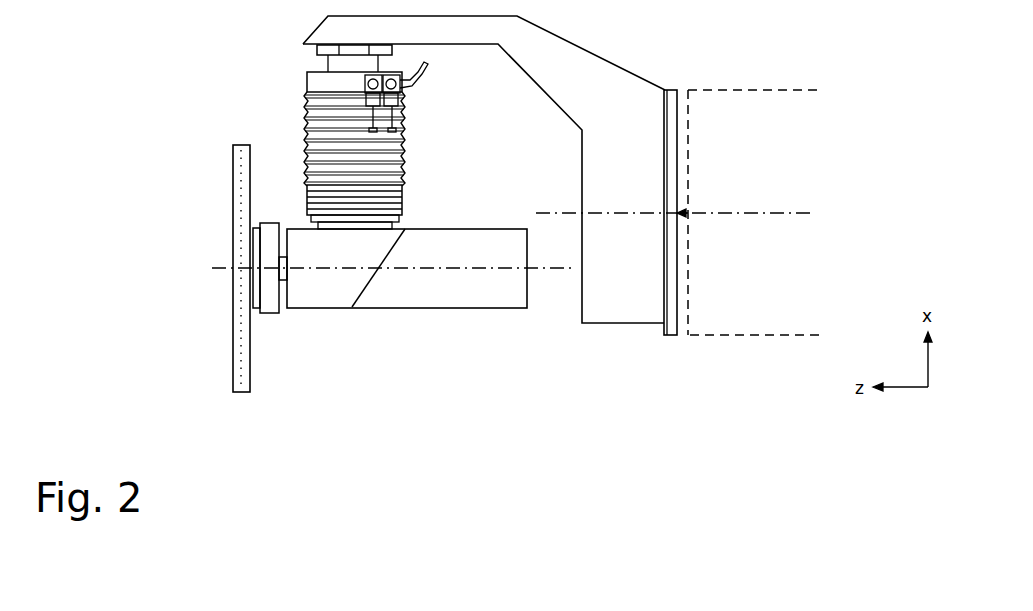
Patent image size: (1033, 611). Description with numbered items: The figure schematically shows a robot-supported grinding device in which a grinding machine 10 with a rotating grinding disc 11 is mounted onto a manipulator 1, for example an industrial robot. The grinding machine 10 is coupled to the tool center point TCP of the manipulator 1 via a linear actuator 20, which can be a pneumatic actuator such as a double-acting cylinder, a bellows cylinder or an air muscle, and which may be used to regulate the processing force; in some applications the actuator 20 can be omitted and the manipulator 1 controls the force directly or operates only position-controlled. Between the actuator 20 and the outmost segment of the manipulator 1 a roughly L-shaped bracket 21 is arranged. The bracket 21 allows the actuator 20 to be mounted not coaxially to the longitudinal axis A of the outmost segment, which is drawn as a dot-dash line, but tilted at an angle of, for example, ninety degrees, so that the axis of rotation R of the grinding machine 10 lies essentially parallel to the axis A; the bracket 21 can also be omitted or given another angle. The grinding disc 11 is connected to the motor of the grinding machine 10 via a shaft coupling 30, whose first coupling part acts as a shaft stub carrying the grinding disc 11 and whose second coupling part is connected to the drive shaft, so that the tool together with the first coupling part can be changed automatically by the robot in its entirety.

The manipulator 1 is at (725, 89).
The bracket 21 is at (575, 80).
The linear actuator 20 is at (312, 70).
The grinding machine 10 is at (500, 314).
The grinding disc 11 is at (233, 173).
The shaft coupling 30 is at (268, 312).
The axis of rotation R is at (478, 268).
The tool center point TCP is at (689, 213).
The longitudinal axis A is at (784, 213).